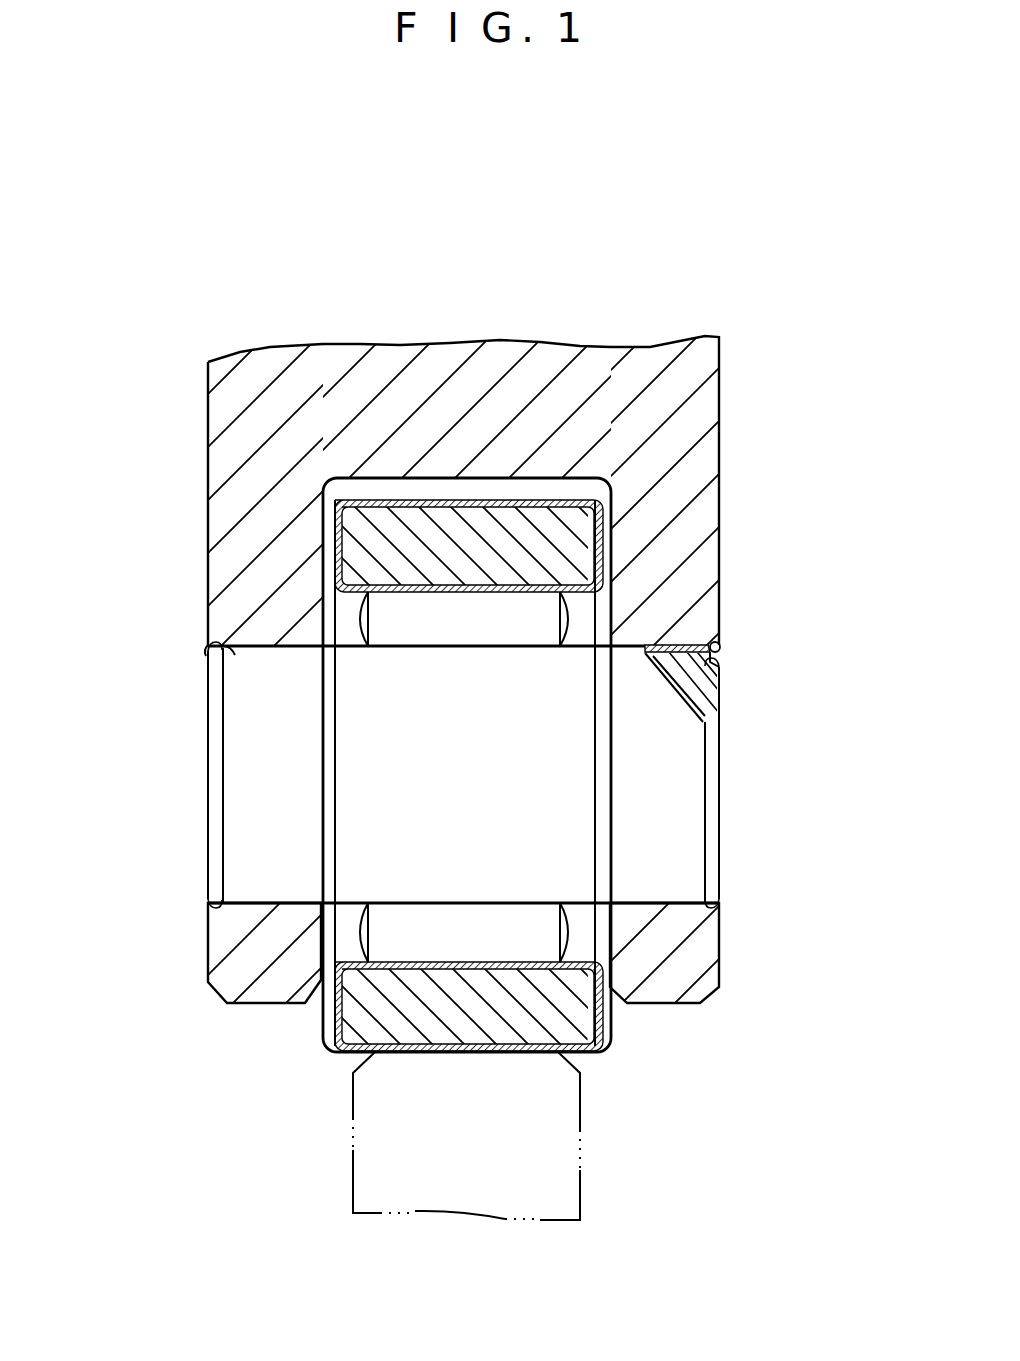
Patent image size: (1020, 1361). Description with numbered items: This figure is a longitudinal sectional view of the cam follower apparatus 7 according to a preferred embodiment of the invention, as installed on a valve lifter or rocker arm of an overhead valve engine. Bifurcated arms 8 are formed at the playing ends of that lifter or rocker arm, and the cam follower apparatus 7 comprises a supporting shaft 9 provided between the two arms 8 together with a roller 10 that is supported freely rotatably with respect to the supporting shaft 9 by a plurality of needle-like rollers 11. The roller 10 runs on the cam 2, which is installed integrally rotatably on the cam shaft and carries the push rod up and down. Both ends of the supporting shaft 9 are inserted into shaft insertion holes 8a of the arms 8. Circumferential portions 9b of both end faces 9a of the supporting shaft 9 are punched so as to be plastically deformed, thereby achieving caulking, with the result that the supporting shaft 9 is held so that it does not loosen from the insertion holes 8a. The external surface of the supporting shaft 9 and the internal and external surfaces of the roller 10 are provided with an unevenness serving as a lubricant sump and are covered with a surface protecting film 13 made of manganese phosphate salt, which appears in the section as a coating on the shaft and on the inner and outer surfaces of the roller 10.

The cam 2 is at (565, 1187).
The cam follower apparatus 7 is at (510, 680).
The bifurcated arms 8 is at (235, 468).
The shaft insertion hole 8a is at (263, 647).
The supporting shaft 9 is at (459, 743).
The end face of supporting shaft 9a is at (208, 808).
The circumferential portion of end face 9b is at (730, 645).
The roller 10 is at (510, 680).
The needle-like rollers 11 is at (460, 925).
The surface protecting film 13 is at (438, 500).